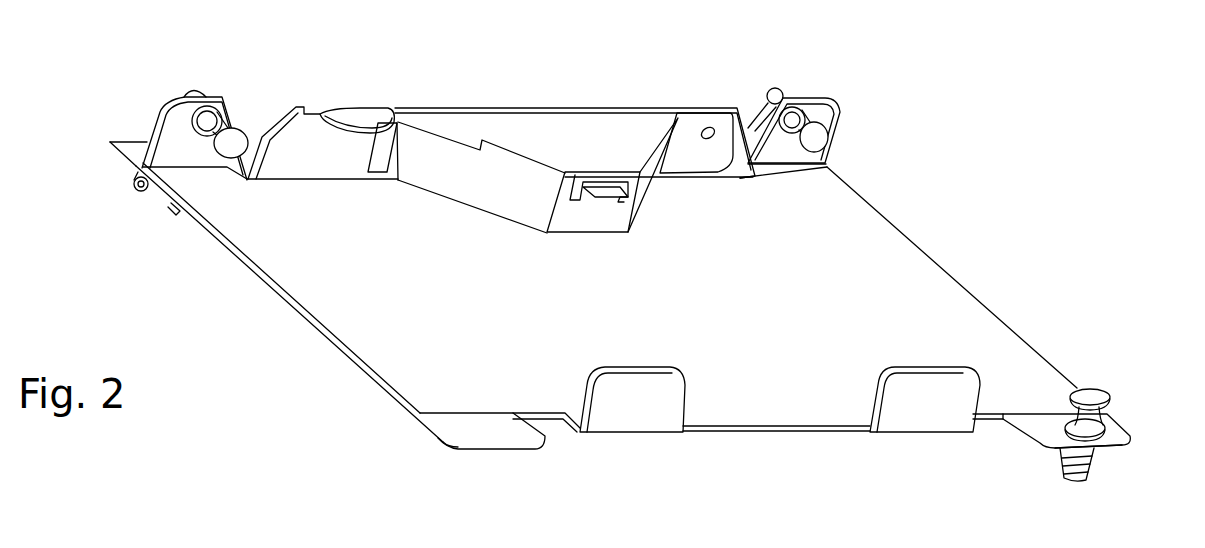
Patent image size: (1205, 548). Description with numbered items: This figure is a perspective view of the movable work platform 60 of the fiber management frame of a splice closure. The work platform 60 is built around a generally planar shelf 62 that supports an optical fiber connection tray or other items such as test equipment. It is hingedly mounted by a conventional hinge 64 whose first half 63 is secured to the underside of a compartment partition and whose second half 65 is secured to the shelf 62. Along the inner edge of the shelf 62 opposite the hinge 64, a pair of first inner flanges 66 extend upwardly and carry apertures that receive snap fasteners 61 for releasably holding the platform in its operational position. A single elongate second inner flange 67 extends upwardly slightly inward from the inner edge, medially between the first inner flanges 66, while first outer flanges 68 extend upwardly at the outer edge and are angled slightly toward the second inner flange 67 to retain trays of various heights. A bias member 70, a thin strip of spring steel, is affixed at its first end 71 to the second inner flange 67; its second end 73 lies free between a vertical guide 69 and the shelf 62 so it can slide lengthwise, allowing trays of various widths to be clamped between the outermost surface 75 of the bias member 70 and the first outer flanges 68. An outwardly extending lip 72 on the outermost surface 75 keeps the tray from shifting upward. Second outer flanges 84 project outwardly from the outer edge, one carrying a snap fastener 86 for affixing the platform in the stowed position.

The movable work platform 60 is at (1000, 196).
The snap fasteners 61 is at (233, 148).
The shelf 62 is at (795, 345).
The first half of hinge 63 is at (131, 150).
The hinge 64 is at (143, 189).
The second half of hinge 65 is at (173, 206).
The first inner flanges 66 is at (826, 100).
The second inner flange 67 is at (516, 108).
The first outer flanges 68 is at (640, 395).
The vertical guide 69 is at (362, 130).
The bias member 70 is at (482, 184).
The first end of bias member 71 is at (690, 130).
The outwardly extending lip 72 is at (605, 195).
The second end of bias member 73 is at (400, 152).
The outermost surface of bias member 75 is at (611, 228).
The second outer flanges 84 is at (462, 432).
The snap fastener 86 is at (1092, 396).